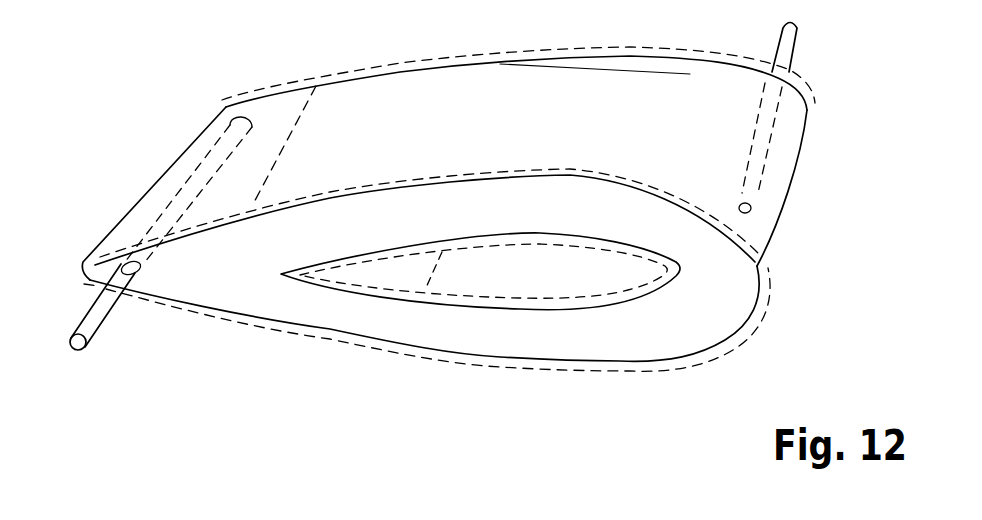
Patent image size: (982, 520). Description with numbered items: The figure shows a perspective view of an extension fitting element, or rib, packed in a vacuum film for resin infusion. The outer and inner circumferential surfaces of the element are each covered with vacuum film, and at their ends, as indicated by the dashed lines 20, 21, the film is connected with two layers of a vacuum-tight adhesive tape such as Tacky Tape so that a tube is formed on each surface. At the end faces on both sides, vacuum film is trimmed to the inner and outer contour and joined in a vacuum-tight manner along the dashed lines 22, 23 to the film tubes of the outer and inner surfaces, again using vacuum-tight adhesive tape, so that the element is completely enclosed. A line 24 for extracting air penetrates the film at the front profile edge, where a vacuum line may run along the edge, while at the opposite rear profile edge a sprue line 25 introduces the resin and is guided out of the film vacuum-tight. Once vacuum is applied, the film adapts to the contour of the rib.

The dashed line 20 is at (298, 130).
The dashed line 21 is at (440, 263).
The dashed line 22 is at (762, 290).
The dashed line 23 is at (585, 308).
The line for extracting air 24 is at (798, 43).
The sprue line 25 is at (110, 320).